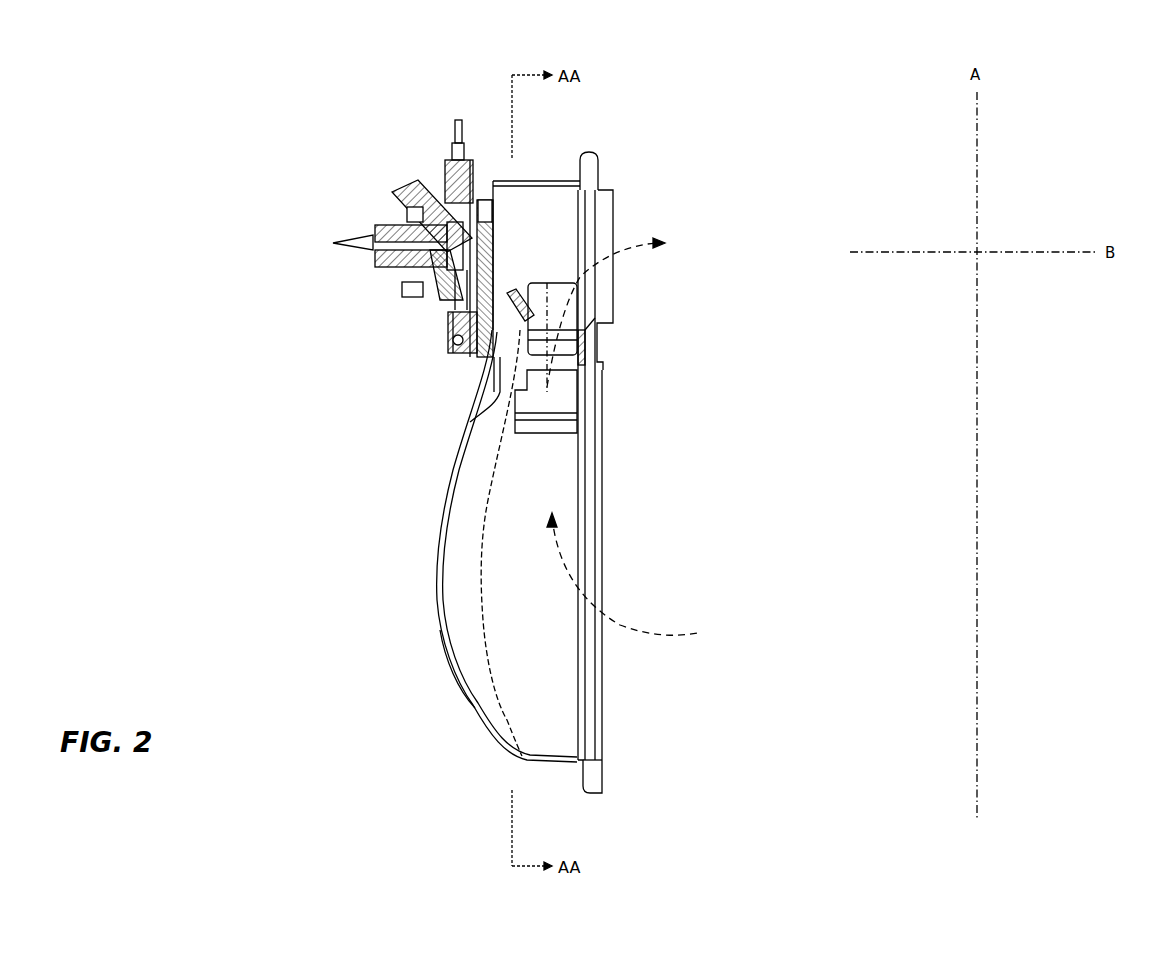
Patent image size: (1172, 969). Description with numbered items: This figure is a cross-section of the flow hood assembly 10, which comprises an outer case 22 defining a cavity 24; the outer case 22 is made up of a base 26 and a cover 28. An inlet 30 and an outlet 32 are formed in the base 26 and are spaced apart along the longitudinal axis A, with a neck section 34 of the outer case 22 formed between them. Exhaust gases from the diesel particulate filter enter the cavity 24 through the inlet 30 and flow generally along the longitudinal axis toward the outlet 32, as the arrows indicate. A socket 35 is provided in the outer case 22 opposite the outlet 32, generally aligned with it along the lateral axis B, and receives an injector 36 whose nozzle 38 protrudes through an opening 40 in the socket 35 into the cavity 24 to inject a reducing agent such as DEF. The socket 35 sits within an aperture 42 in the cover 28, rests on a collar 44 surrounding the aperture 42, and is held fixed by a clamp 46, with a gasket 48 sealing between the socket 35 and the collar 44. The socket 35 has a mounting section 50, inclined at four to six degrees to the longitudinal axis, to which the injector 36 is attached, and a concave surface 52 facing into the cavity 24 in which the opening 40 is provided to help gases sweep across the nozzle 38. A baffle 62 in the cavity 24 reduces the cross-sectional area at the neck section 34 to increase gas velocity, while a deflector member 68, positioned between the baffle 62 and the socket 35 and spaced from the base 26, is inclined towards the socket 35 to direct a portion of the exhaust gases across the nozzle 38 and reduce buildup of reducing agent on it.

The flow hood assembly 10 is at (318, 176).
The outer case 22 is at (430, 525).
The cavity 24 is at (522, 572).
The base 26 is at (490, 222).
The cover 28 is at (448, 650).
The inlet 30 is at (602, 693).
The outlet 32 is at (608, 213).
The neck section 34 is at (585, 367).
The socket 35 is at (487, 203).
The injector 36 is at (392, 267).
The nozzle 38 is at (473, 246).
The opening 40 is at (484, 257).
The aperture 42 is at (483, 198).
The collar 44 is at (453, 333).
The clamp 46 is at (447, 180).
The gasket 48 is at (457, 341).
The mounting section 50 is at (467, 227).
The concave surface 52 is at (480, 238).
The baffle 62 is at (563, 398).
The deflector member 68 is at (515, 310).